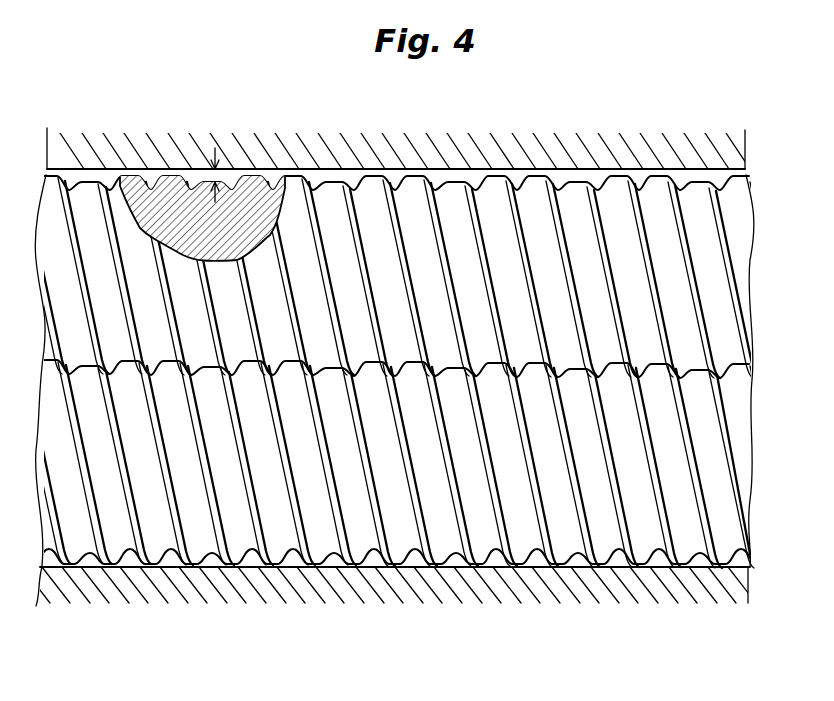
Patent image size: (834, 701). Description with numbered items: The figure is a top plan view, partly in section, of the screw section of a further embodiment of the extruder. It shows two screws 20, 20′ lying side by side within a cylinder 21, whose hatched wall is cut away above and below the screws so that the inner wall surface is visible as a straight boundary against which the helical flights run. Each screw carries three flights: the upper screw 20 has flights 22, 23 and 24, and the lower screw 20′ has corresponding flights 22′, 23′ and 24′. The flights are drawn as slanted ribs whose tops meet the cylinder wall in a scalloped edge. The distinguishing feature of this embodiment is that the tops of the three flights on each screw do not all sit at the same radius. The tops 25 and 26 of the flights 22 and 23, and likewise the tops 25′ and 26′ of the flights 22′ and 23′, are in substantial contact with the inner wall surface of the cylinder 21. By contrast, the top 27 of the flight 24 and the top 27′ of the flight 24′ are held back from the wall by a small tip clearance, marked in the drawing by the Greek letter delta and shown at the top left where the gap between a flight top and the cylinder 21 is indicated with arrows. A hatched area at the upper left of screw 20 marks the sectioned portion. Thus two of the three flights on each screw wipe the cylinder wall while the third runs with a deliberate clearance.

The screw 20 is at (745, 270).
The screw 20′ is at (745, 443).
The cylinder 21 is at (746, 152).
The flight 22 is at (651, 176).
The flight 23 is at (608, 181).
The flight 24 is at (563, 191).
The top 25 is at (667, 171).
The top 26 is at (622, 180).
The top 27 is at (560, 190).
The flight 22′ is at (735, 553).
The flight 23′ is at (688, 558).
The flight 24′ is at (652, 556).
The top 25′ is at (730, 552).
The top 26′ is at (688, 556).
The top 27′ is at (650, 554).